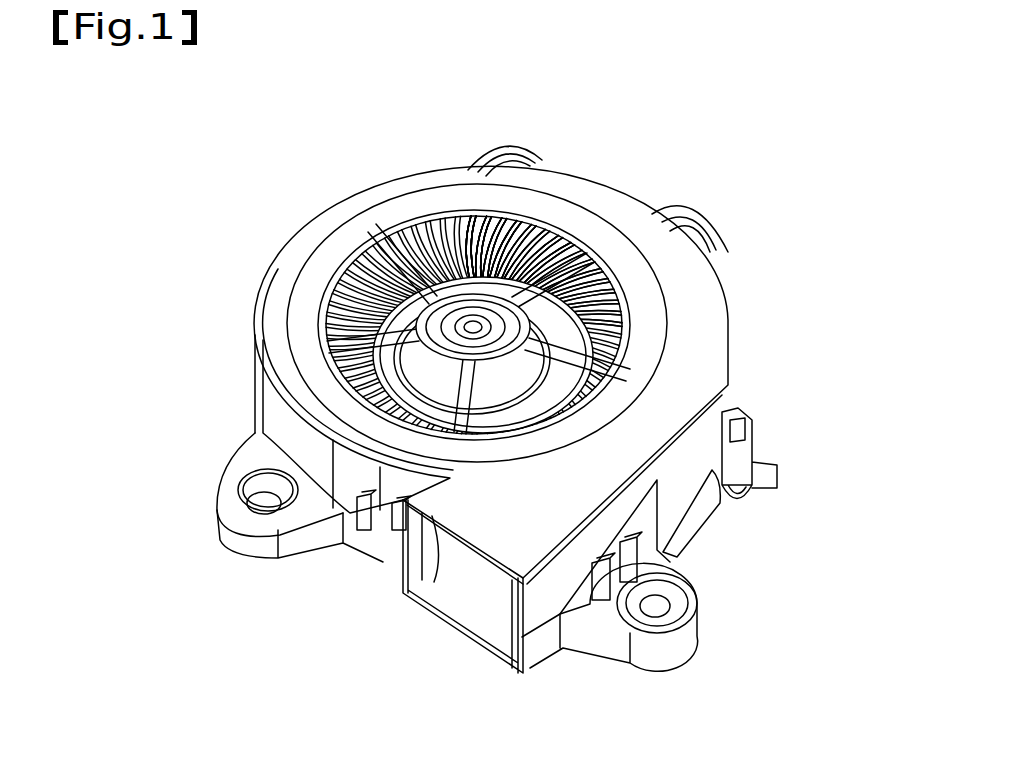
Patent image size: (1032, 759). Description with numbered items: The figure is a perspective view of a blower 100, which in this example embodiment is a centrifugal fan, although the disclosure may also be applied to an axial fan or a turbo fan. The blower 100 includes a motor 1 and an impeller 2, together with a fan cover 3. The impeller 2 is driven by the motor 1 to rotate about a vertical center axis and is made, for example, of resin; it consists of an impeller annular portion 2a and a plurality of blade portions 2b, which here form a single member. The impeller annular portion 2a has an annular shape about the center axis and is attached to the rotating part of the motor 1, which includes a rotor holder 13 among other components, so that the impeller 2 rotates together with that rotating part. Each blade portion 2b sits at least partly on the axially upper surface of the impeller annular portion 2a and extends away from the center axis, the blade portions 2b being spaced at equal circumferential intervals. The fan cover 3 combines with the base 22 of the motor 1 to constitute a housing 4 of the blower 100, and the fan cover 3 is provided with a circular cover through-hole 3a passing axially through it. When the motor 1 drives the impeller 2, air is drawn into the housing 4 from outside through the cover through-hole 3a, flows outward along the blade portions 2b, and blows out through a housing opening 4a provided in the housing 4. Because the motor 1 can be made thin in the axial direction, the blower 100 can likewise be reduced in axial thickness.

The blower 100 is at (727, 163).
The motor 1 is at (583, 317).
The rotor holder 13 is at (587, 404).
The impeller 2 is at (372, 258).
The impeller annular portion 2a is at (360, 377).
The blade portion 2b is at (333, 267).
The fan cover 3 is at (727, 510).
The cover through-hole 3a is at (535, 420).
The housing 4 is at (832, 505).
The base 22 is at (688, 525).
The housing opening 4a is at (473, 608).